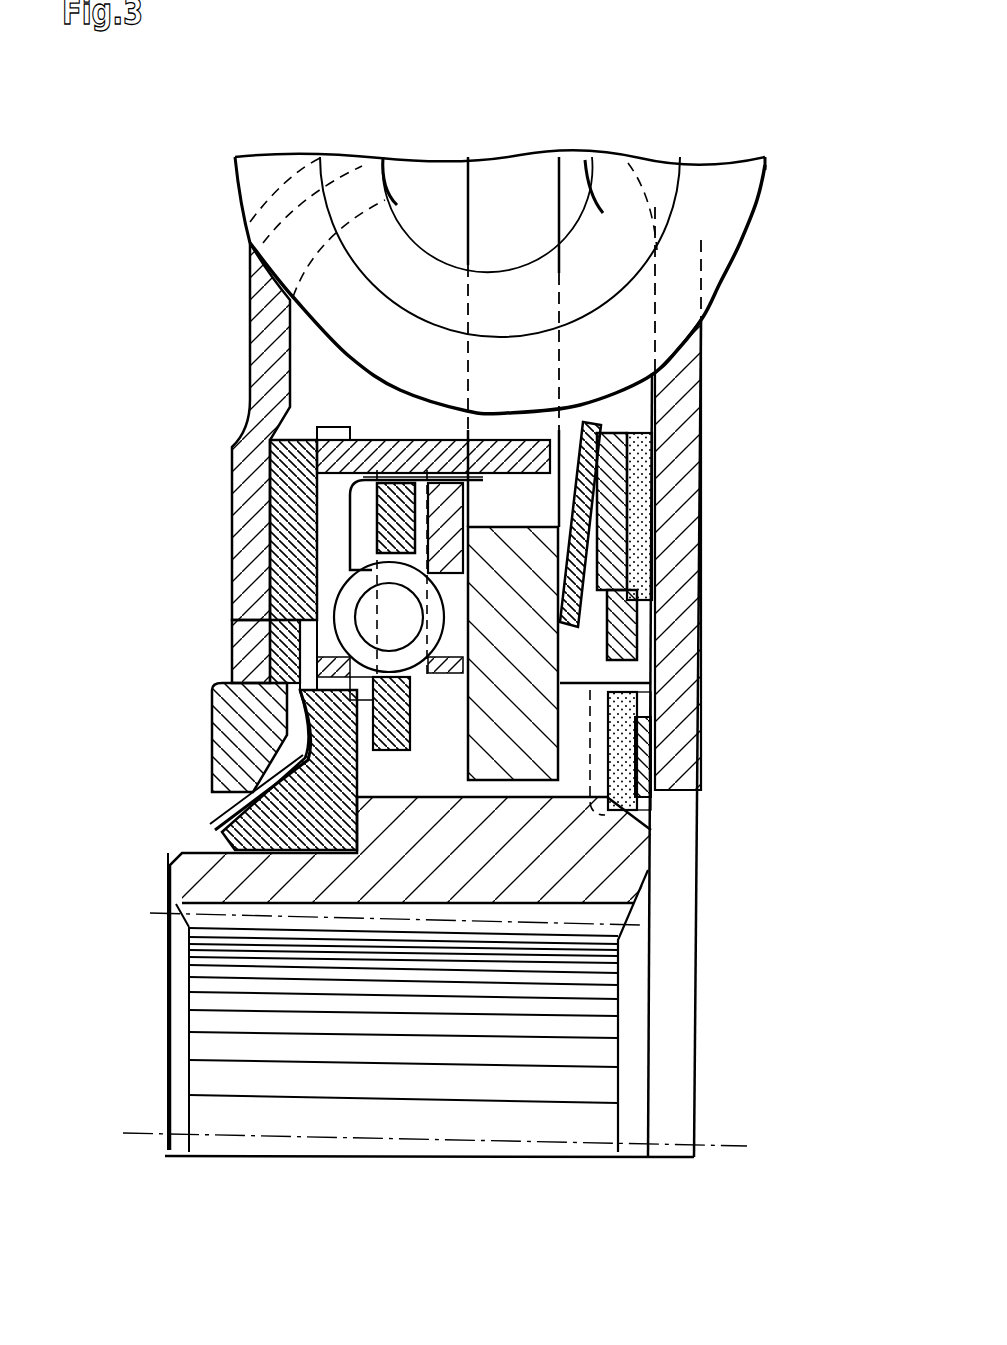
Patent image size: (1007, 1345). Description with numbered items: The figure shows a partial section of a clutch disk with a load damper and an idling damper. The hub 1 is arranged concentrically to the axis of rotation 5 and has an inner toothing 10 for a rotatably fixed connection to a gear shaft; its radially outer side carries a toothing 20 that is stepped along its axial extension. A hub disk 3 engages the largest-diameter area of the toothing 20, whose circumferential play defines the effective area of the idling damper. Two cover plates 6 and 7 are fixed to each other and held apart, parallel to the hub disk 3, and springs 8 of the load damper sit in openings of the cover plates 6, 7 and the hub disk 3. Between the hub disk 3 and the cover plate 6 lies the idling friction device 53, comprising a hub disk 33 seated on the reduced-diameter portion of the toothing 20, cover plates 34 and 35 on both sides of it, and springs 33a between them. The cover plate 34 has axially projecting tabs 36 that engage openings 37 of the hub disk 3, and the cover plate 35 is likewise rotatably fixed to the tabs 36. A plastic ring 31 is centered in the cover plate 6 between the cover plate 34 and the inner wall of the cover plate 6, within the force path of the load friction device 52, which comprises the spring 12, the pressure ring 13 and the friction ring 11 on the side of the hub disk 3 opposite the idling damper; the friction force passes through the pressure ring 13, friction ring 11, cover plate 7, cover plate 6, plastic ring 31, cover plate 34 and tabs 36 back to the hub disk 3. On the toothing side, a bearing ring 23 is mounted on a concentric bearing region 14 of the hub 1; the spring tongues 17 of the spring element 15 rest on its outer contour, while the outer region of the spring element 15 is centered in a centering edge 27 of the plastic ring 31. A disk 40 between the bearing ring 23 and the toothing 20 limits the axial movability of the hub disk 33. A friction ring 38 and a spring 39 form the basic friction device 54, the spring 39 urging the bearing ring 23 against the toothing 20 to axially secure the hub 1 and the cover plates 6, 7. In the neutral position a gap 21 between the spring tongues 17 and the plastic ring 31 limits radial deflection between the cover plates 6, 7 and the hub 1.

The hub 1 is at (640, 850).
The hub disk 3 is at (540, 770).
The axis of rotation 5 is at (740, 1146).
The cover plate 6 is at (255, 310).
The cover plate 7 is at (700, 380).
The springs 8 is at (692, 212).
The inner toothing 10 is at (600, 940).
The friction ring 11 is at (655, 503).
The spring 12 is at (653, 417).
The pressure ring 13 is at (648, 622).
The bearing region 14 is at (253, 853).
The spring element 15 is at (247, 763).
The spring tongues 17 is at (222, 827).
The toothing 20 is at (193, 937).
The gap 21 is at (205, 805).
The bearing ring 23 is at (255, 665).
The centering edge 27 is at (362, 587).
The plastic ring 31 is at (222, 708).
The hub disk 33 is at (383, 550).
The springs 33a is at (350, 550).
The cover plate 34 is at (330, 500).
The cover plate 35 is at (560, 675).
The tabs 36 is at (300, 427).
The openings 37 is at (655, 460).
The friction ring 38 is at (625, 718).
The spring 39 is at (640, 760).
The disk 40 is at (300, 690).
The load friction device 52 is at (660, 643).
The idling friction device 53 is at (318, 440).
The basic friction device 54 is at (815, 692).